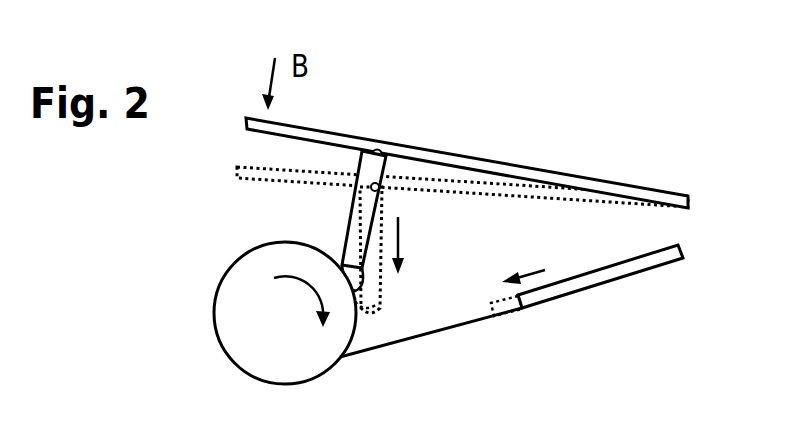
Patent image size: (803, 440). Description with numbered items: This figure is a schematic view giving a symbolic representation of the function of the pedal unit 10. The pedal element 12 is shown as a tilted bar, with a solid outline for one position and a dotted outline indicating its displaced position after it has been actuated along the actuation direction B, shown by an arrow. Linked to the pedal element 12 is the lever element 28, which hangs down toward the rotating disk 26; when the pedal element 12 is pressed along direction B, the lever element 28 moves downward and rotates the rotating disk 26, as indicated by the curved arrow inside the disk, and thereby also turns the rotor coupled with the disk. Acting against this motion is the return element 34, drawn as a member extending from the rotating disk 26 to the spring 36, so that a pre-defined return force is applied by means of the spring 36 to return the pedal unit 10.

The pedal unit 10 is at (652, 80).
The pedal element 12 is at (400, 147).
The rotating disk 26 is at (213, 313).
The lever element 28 is at (350, 222).
The return element 34 is at (448, 331).
The spring 36 is at (560, 296).